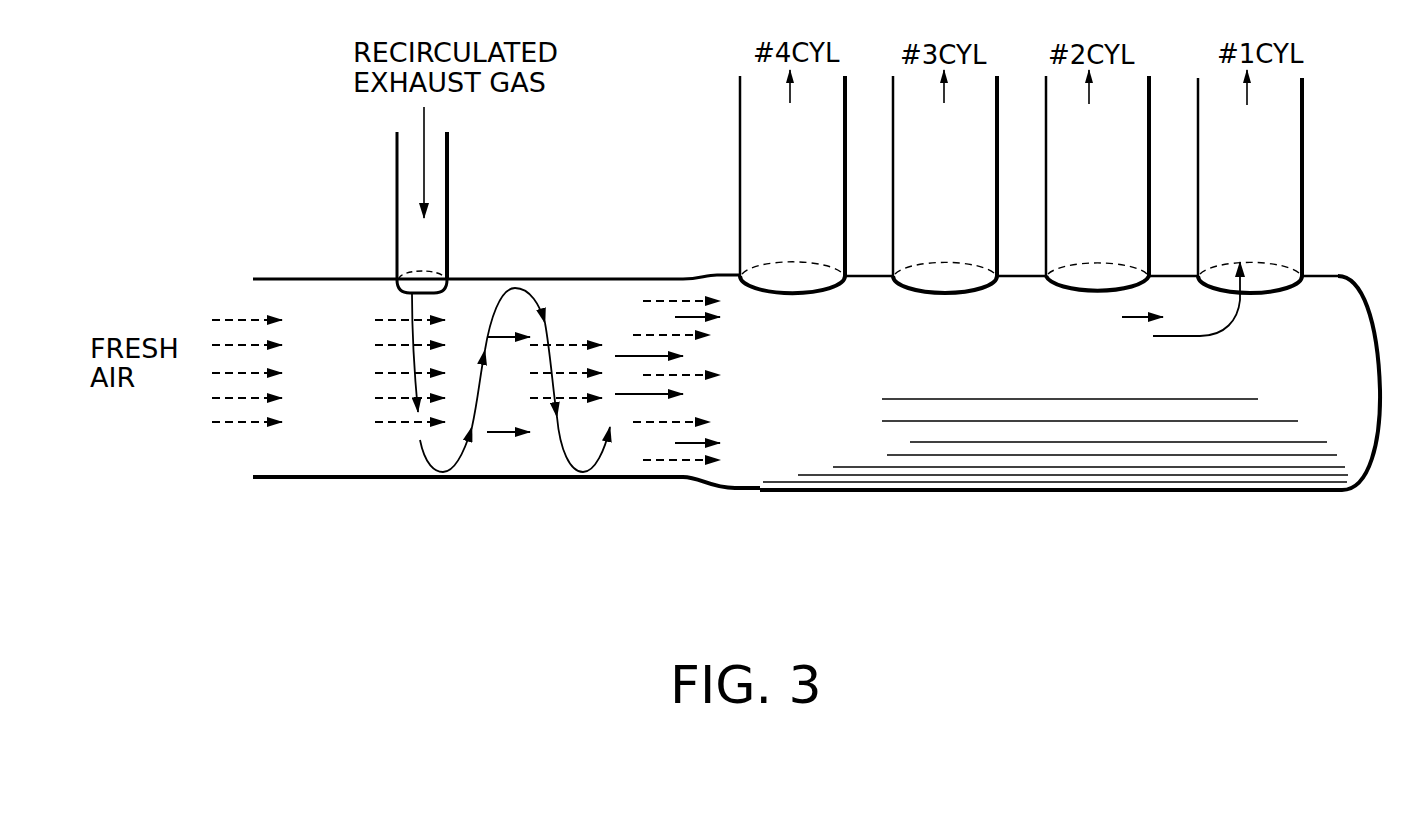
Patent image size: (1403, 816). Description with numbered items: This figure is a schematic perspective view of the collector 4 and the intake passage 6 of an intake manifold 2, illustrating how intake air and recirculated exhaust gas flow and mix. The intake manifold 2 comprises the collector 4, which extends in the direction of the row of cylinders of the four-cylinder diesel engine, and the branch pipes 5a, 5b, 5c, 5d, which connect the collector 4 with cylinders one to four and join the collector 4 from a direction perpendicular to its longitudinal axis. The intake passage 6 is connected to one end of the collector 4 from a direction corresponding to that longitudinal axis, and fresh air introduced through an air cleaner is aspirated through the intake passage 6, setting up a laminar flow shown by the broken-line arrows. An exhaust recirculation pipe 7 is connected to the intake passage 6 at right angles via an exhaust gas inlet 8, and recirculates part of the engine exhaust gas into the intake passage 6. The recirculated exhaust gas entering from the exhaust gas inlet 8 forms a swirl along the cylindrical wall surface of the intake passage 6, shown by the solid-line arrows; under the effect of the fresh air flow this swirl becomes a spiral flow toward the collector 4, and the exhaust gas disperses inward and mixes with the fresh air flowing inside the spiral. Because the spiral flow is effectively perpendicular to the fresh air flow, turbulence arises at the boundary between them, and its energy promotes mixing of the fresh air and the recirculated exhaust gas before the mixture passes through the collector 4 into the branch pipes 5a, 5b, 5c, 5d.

The intake manifold 2 is at (882, 494).
The collector 4 is at (1000, 407).
The branch pipe 5a is at (1275, 137).
The branch pipe 5b is at (1127, 107).
The branch pipe 5c is at (968, 107).
The branch pipe 5d is at (755, 125).
The intake passage 6 is at (370, 450).
The exhaust recirculation pipe 7 is at (397, 173).
The exhaust gas inlet 8 is at (436, 299).